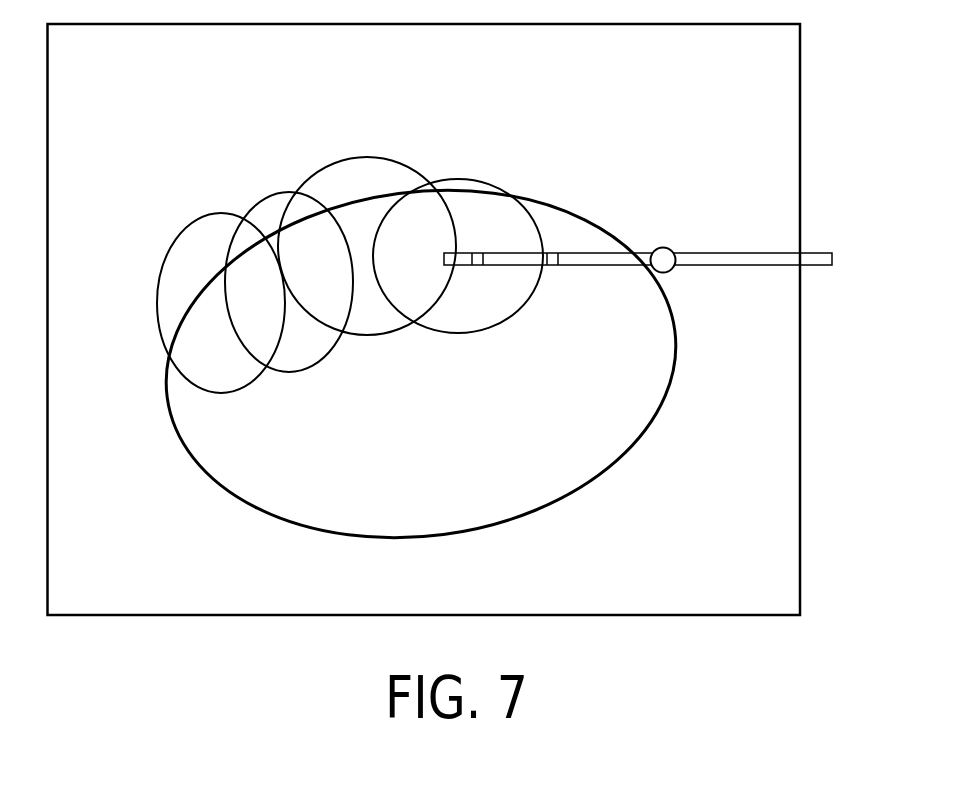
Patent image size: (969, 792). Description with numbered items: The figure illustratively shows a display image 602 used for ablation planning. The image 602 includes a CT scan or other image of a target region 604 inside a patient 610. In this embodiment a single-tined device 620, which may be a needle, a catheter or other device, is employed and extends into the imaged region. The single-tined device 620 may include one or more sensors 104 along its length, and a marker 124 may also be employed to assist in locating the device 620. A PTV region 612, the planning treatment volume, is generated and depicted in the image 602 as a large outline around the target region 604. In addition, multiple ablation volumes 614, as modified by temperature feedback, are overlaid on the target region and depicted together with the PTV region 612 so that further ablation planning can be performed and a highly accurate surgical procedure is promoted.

The patient 610 is at (466, 319).
The display image 602 is at (782, 480).
The target region 604 is at (598, 438).
The PTV region 612 is at (421, 364).
The ablation volumes 614 is at (212, 214).
The single-tined device 620 is at (764, 251).
The sensors 104 is at (566, 254).
The marker 124 is at (663, 247).